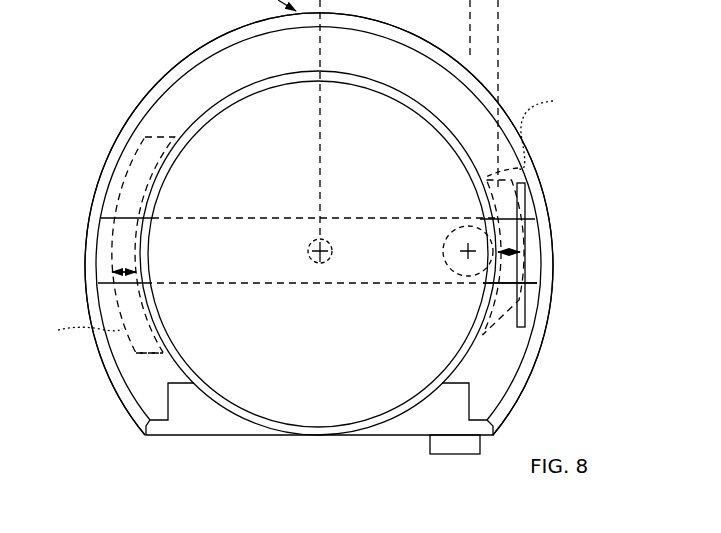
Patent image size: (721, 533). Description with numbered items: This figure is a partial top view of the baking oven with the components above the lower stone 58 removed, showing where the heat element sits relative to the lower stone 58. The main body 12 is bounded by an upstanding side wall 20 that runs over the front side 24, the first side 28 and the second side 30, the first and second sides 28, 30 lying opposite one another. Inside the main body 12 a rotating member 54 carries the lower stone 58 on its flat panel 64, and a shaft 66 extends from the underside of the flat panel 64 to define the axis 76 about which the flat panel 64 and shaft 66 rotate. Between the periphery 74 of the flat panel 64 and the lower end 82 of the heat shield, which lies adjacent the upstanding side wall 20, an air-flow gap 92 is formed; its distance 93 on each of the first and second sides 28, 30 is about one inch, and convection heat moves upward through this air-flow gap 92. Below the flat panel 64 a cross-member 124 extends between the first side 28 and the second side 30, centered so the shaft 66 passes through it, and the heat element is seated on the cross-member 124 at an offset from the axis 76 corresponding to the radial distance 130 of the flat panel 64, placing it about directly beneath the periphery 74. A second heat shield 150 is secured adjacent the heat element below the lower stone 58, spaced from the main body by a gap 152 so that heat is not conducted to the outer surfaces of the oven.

The main body 12 is at (82, 110).
The upstanding side wall 20 is at (521, 192).
The front side 24 is at (222, 440).
The first side 28 is at (556, 251).
The second side 30 is at (78, 265).
The rotating member 54 is at (154, 369).
The lower stone 58 is at (437, 340).
The flat panel 64 is at (152, 335).
The shaft 66 is at (310, 250).
The periphery 74 is at (523, 292).
The axis 76 is at (311, 254).
The lower end 82 is at (305, 214).
The air-flow gap 92 is at (126, 175).
The distance 93 is at (125, 273).
The cross-member 124 is at (104, 245).
The radial distance 130 is at (485, 0).
The second heat shield 150 is at (495, 322).
The gap 152 is at (536, 243).